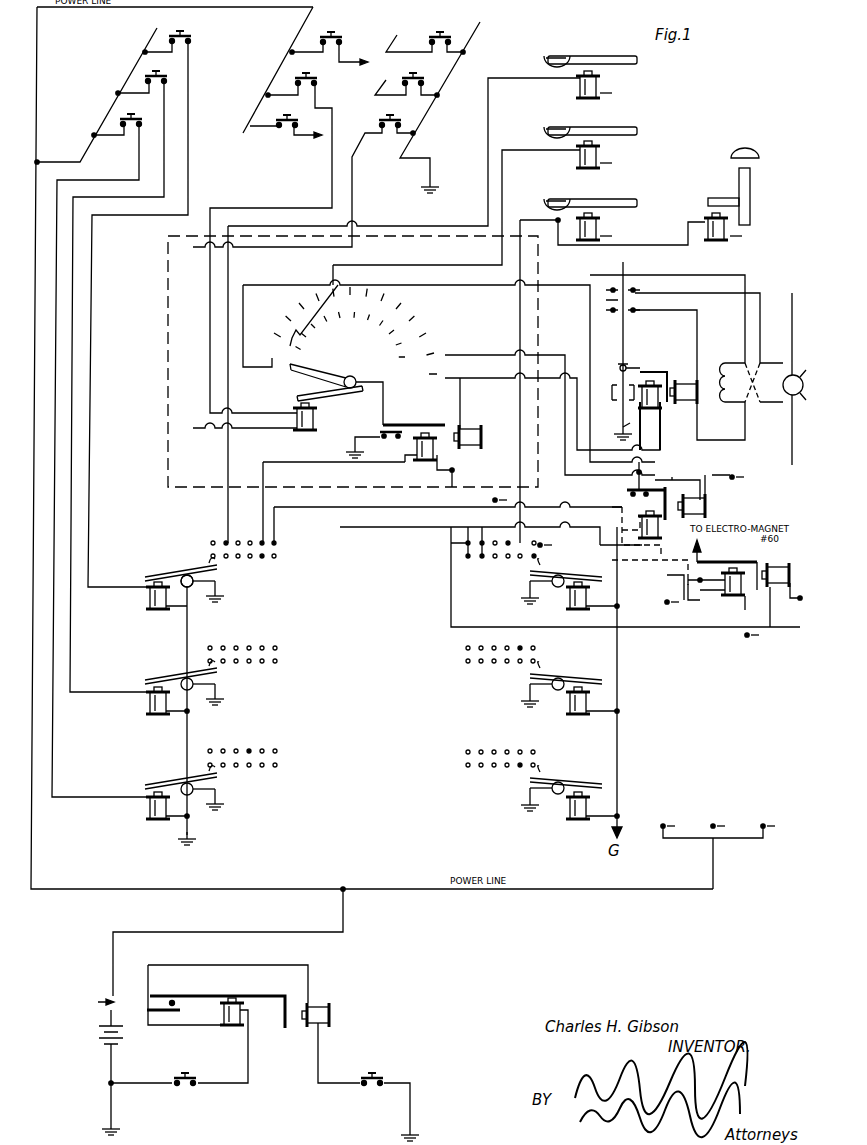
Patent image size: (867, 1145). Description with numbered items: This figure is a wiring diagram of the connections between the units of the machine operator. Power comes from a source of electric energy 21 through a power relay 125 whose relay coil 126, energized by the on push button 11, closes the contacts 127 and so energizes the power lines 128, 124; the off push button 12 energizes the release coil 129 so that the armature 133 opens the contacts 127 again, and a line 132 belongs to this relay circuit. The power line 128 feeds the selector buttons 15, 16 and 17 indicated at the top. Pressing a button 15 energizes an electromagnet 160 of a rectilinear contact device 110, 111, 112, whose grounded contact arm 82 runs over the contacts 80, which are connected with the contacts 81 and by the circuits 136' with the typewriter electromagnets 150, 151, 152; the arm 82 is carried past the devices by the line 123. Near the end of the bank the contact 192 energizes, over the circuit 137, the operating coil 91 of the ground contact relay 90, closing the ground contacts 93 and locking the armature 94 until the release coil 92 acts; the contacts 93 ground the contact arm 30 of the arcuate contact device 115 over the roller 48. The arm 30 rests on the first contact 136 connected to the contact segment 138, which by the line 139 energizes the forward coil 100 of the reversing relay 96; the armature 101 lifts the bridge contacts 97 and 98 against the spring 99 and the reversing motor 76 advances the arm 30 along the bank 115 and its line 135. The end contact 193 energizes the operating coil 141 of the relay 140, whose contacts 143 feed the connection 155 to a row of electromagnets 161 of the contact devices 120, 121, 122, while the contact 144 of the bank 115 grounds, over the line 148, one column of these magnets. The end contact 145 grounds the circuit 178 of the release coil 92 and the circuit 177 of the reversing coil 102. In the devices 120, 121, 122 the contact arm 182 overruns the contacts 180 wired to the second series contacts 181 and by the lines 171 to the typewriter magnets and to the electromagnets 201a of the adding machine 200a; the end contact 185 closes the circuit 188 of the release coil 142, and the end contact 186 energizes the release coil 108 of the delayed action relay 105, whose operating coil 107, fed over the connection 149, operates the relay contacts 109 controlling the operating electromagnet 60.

The power line 128 is at (95, 8).
The power line 124 is at (683, 462).
The selector button 15 is at (190, 38).
The selector button 17 is at (340, 36).
The selector button 16 is at (445, 34).
The line 139 is at (396, 288).
The end contact 145 is at (438, 364).
The contact 144 is at (435, 353).
The conductor 135 is at (360, 509).
The line 148 is at (560, 505).
The circuit 137 is at (372, 463).
The circuit 136' is at (248, 384).
The typewriter electromagnet 150 is at (598, 88).
The typewriter electromagnet 151 is at (598, 158).
The typewriter electromagnet 152 is at (598, 230).
The adding machine 200a is at (751, 205).
The adding machine electromagnet 201a is at (716, 242).
The arcuate contact device 115 is at (422, 322).
The contact segment 138 is at (270, 360).
The contact arm 30 is at (326, 366).
The first contact 136 is at (315, 389).
The operating electromagnet 60 is at (313, 420).
The armature 94 is at (425, 420).
The ground contacts 93 is at (391, 428).
The operating coil 91 is at (418, 462).
The release coil 92 is at (437, 462).
The ground contact relay 90 is at (470, 427).
The circuit 178 is at (463, 405).
The line 171 is at (518, 435).
The bridge contact 97 is at (683, 342).
The bridge contact 98 is at (612, 326).
The reversing relay 96 is at (614, 378).
The spring 99 is at (620, 426).
The circuit 177 is at (578, 450).
The forward coil 100 is at (648, 380).
The armature 101 is at (666, 372).
The reversing coil 102 is at (683, 380).
The reversing motor 76 is at (778, 377).
The contacts 143 is at (610, 500).
The relay 140 is at (650, 490).
The release coil 142 is at (708, 502).
The operating coil 141 is at (644, 546).
The connection 149 is at (645, 563).
The connection 155 is at (618, 596).
The relay contacts 109 is at (706, 564).
The delayed action relay 105 is at (758, 560).
The operating coil 107 is at (728, 596).
The release coil 108 is at (790, 567).
The electromagnet 160 is at (150, 594).
The contact arm 82 is at (200, 557).
The roller 48 is at (190, 592).
The conductor 123 is at (190, 724).
The contact device 111 is at (272, 646).
The contact device 112 is at (272, 748).
The contacts 81 is at (226, 540).
The contact series 80 is at (278, 556).
The contact device 110 is at (276, 541).
The contact 192 is at (262, 560).
The end contact 193 is at (275, 560).
The electromagnet 161 is at (570, 604).
The contacts 180 is at (551, 581).
The contact device 121 is at (467, 672).
The contact device 122 is at (460, 765).
The contact device 120 is at (452, 543).
The end contact 186 is at (466, 556).
The end contact 185 is at (480, 560).
The second series contacts 181 is at (500, 540).
The circuit 188 is at (534, 548).
The contact arm 182 is at (570, 556).
The conductor 132 is at (192, 966).
The armature 133 is at (240, 996).
The contacts 127 is at (178, 998).
The power relay 125 is at (98, 1001).
The source of electric energy 21 is at (100, 1040).
The relay coil 126 is at (230, 1030).
The on push button 11 is at (172, 1072).
The release coil 129 is at (322, 1003).
The off push button 12 is at (380, 1076).